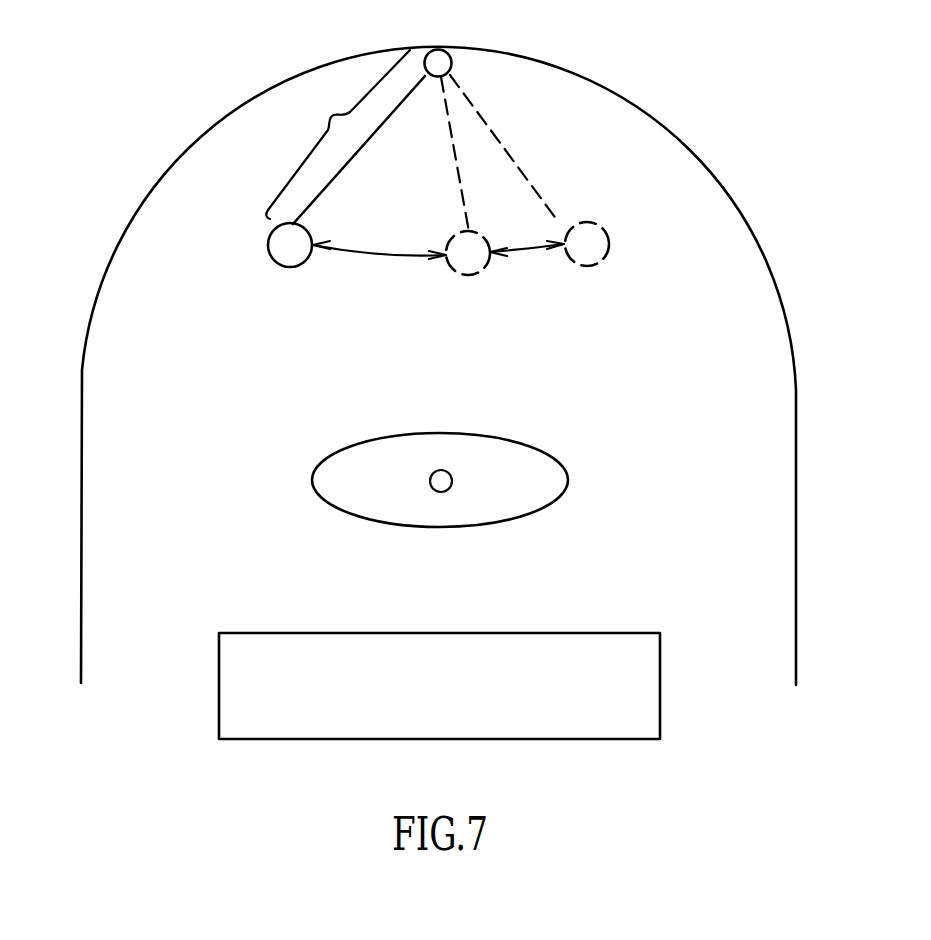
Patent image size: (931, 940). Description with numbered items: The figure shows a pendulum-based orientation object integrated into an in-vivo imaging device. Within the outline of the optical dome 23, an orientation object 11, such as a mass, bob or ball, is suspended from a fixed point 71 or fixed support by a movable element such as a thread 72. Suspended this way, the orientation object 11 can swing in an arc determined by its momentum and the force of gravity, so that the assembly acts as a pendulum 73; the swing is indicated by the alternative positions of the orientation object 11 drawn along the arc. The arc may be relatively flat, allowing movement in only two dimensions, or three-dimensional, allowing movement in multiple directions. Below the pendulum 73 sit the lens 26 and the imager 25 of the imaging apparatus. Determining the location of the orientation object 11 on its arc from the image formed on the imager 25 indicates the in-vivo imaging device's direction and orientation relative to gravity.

The optical dome 23 is at (635, 110).
The fixed point 71 is at (451, 69).
The thread 72 is at (354, 155).
The pendulum 73 is at (338, 134).
The orientation object 11 is at (272, 262).
The lens 26 is at (568, 480).
The imager 25 is at (219, 686).